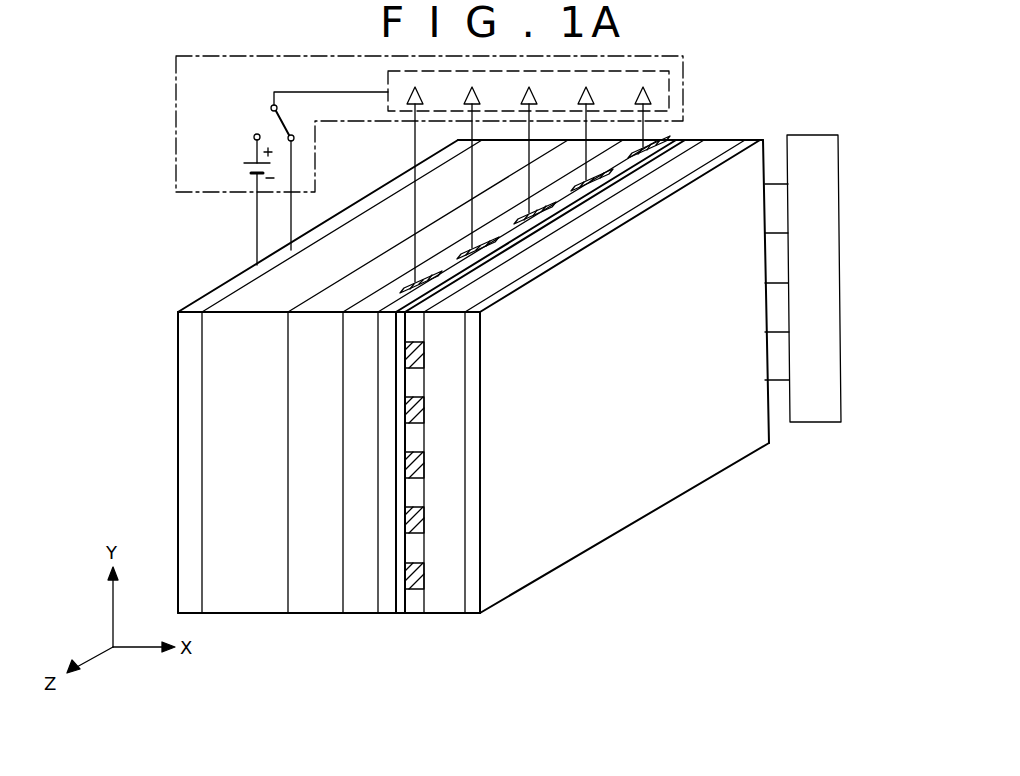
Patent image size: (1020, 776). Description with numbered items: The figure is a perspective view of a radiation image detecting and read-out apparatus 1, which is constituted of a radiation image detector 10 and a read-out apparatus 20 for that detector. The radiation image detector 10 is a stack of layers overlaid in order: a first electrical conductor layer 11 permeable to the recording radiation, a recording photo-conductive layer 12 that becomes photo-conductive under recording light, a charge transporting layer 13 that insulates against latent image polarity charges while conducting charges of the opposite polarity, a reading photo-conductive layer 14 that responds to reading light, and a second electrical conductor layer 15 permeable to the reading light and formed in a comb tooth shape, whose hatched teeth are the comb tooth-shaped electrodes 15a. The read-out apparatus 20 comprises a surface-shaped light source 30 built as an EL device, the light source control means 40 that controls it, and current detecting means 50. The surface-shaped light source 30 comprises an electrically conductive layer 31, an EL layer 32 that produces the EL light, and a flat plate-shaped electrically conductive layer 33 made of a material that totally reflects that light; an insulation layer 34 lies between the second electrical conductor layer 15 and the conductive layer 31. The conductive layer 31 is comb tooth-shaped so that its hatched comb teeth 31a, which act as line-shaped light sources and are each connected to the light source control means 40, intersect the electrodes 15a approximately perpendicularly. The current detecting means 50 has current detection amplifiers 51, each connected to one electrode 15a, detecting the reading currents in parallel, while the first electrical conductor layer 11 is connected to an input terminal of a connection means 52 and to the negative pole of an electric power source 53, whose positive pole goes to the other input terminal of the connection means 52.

The radiation image detecting and read-out apparatus 1 is at (126, 77).
The radiation image detector 10 is at (426, 443).
The first electrical conductor layer 11 is at (192, 615).
The recording photo-conductive layer 12 is at (232, 613).
The charge transporting layer 13 is at (305, 613).
The reading photo-conductive layer 14 is at (358, 613).
The second electrical conductor layer 15 is at (512, 421).
The comb tooth-shaped electrodes 15a is at (668, 150).
The read-out apparatus 20 is at (802, 80).
The surface-shaped light source 30 is at (567, 443).
The electrically conductive layer 31 is at (423, 615).
The comb teeth 31a is at (417, 613).
The EL layer 32 is at (447, 613).
The electrically conductive layer 33 is at (475, 615).
The insulation layer 34 is at (401, 615).
The light source control means 40 is at (838, 163).
The current detecting means 50 is at (462, 151).
The current detection amplifiers 51 is at (652, 92).
The connection means 52 is at (270, 124).
The electric power source 53 is at (243, 172).